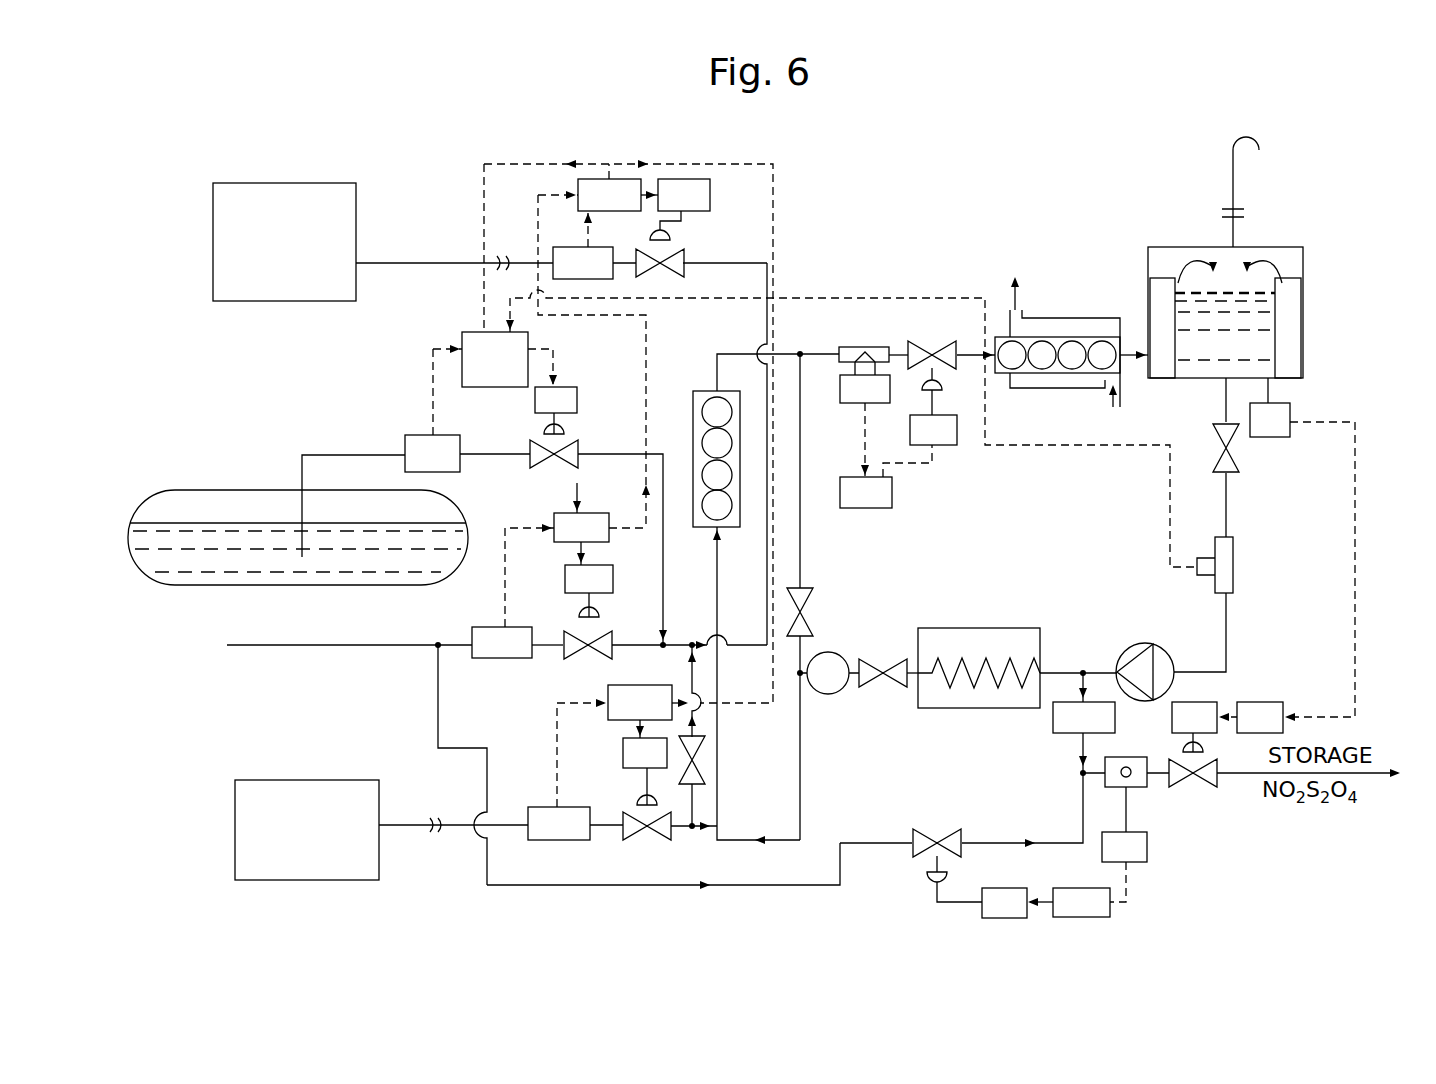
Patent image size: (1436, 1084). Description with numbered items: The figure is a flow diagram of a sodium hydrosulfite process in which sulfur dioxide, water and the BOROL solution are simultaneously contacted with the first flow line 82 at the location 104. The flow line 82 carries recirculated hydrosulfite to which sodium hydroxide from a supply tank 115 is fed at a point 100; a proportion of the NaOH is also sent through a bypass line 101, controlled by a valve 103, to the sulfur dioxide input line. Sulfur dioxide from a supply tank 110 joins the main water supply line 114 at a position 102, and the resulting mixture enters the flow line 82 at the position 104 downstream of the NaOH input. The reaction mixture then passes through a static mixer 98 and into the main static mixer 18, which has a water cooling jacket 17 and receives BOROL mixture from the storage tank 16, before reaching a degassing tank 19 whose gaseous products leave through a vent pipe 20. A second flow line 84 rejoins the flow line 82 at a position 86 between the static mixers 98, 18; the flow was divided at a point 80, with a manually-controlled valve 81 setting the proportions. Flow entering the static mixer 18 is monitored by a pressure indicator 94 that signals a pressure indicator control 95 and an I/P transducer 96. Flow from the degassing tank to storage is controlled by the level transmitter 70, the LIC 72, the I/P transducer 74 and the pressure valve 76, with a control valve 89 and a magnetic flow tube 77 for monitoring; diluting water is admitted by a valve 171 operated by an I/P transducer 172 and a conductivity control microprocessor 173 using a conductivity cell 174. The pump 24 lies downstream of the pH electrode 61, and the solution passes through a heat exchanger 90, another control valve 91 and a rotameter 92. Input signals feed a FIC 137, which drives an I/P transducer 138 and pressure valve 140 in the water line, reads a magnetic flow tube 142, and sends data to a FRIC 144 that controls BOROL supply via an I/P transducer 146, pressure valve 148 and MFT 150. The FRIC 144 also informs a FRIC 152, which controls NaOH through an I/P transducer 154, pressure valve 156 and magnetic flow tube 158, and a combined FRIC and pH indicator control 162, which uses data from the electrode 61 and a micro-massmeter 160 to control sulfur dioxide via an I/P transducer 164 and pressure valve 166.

The storage tank 16 is at (213, 228).
The water cooling jacket 17 is at (1088, 318).
The static mixer 18 is at (1040, 337).
The degassing tank 19 is at (1301, 332).
The vent pipe 20 is at (1236, 178).
The pump 24 is at (1150, 646).
The pH electrode 61 is at (1235, 585).
The level transmitter 70 is at (1292, 410).
The LIC 72 is at (1276, 703).
The I/P transducer 74 is at (1208, 703).
The pressure valve 76 is at (1184, 788).
The magnetic flow tube 77 is at (1070, 734).
The point 80 is at (797, 680).
The manually-controlled valve 81 is at (814, 614).
The first flow line 82 is at (801, 787).
The second flow line 84 is at (801, 436).
The position 86 is at (801, 350).
The control valve 89 is at (1241, 455).
The heat exchanger 90 is at (982, 710).
The control valve 91 is at (870, 664).
The rotameter 92 is at (843, 693).
The pressure indicator 94 is at (868, 347).
The pressure indicator control 95 is at (892, 493).
The I/P transducer 96 is at (952, 446).
The static mixer 98 is at (706, 390).
The point 100 is at (712, 829).
The bypass line 101 is at (693, 806).
The position 102 is at (662, 650).
The valve 103 is at (705, 756).
The position 104 is at (722, 641).
The supply tank 110 is at (365, 585).
The main water supply line 114 is at (338, 650).
The supply tank 115 is at (235, 840).
The FIC 137 is at (609, 540).
The I/P transducer 138 is at (613, 588).
The pressure valve 140 is at (578, 660).
The magnetic flow tube 142 is at (498, 660).
The FRIC 144 is at (578, 192).
The I/P transducer 146 is at (700, 211).
The pressure valve 148 is at (686, 262).
The MFT 150 is at (553, 258).
The FRIC 152 is at (612, 720).
The I/P transducer 154 is at (623, 753).
The pressure valve 156 is at (638, 845).
The magnetic flow tube 158 is at (552, 841).
The micro-massmeter 160 is at (408, 435).
The combined FRIC and pH indicator control 162 is at (464, 332).
The I/P transducer 164 is at (577, 388).
The pressure valve 166 is at (544, 470).
The valve 171 is at (958, 834).
The I/P transducer 172 is at (982, 910).
The conductivity control microprocessor 173 is at (1110, 914).
The conductivity cell 174 is at (1138, 788).